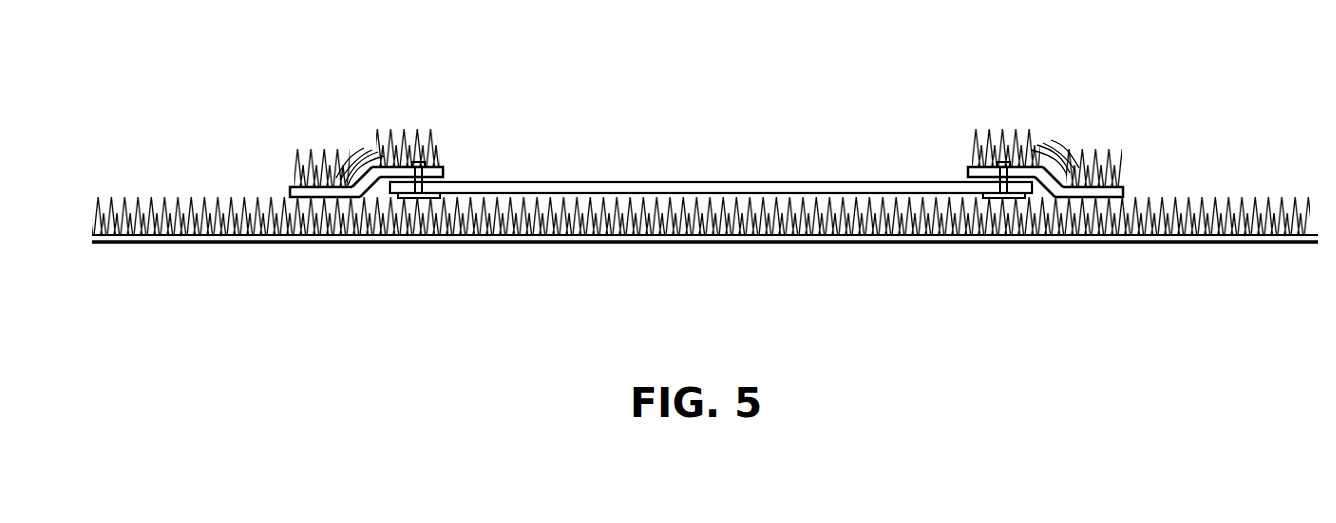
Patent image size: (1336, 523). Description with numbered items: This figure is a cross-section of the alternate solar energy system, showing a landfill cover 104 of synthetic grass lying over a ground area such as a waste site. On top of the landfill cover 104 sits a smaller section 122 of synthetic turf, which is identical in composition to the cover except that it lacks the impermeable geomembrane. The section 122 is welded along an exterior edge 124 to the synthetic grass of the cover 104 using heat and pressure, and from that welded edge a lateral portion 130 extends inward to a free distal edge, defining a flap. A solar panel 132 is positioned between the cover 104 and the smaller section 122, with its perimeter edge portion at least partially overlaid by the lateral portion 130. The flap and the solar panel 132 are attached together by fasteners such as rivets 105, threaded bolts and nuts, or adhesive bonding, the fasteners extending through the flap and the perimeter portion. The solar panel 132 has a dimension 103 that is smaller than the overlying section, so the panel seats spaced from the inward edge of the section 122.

The dimension 103 is at (1000, 163).
The landfill cover 104 is at (1183, 207).
The rivets 105 is at (443, 178).
The smaller section of synthetic turf 122 is at (360, 187).
The exterior edge 124 is at (330, 198).
The lateral portion 130 is at (404, 100).
The solar panel 132 is at (657, 190).